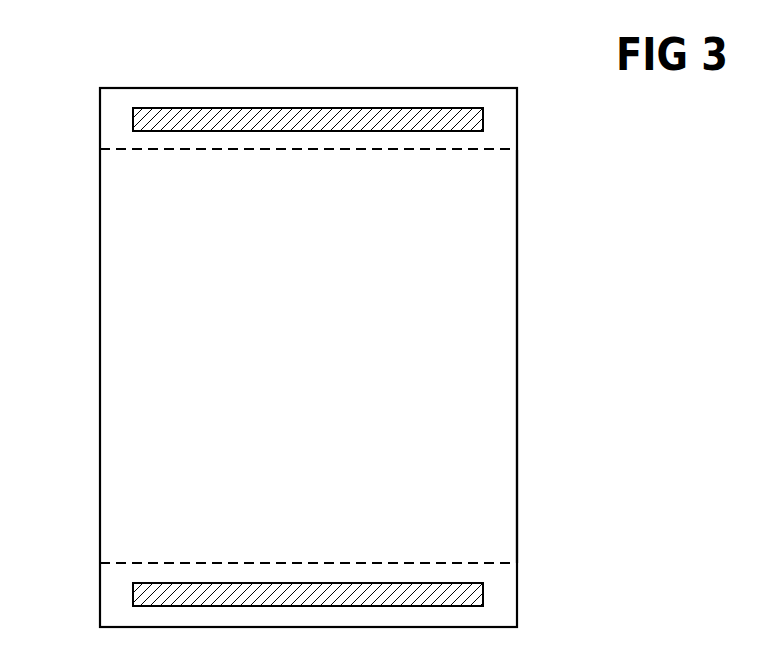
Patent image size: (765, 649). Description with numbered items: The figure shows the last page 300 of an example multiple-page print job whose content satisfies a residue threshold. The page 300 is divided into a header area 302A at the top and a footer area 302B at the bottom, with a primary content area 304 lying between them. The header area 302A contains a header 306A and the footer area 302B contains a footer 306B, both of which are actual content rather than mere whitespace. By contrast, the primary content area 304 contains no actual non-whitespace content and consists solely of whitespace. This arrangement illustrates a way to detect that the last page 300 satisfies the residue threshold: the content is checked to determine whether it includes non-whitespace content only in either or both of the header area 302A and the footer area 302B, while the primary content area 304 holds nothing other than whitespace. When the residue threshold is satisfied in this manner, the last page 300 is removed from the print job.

The last page 300 is at (193, 88).
The header area 302A is at (510, 118).
The footer area 302B is at (510, 602).
The primary content area 304 is at (510, 290).
The header 306A is at (133, 118).
The footer 306B is at (133, 588).